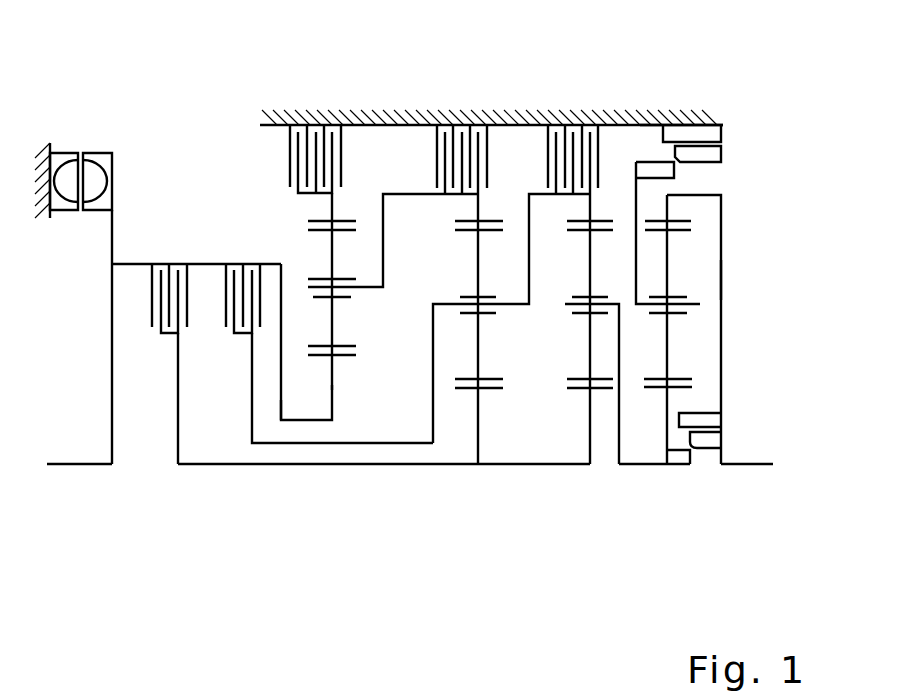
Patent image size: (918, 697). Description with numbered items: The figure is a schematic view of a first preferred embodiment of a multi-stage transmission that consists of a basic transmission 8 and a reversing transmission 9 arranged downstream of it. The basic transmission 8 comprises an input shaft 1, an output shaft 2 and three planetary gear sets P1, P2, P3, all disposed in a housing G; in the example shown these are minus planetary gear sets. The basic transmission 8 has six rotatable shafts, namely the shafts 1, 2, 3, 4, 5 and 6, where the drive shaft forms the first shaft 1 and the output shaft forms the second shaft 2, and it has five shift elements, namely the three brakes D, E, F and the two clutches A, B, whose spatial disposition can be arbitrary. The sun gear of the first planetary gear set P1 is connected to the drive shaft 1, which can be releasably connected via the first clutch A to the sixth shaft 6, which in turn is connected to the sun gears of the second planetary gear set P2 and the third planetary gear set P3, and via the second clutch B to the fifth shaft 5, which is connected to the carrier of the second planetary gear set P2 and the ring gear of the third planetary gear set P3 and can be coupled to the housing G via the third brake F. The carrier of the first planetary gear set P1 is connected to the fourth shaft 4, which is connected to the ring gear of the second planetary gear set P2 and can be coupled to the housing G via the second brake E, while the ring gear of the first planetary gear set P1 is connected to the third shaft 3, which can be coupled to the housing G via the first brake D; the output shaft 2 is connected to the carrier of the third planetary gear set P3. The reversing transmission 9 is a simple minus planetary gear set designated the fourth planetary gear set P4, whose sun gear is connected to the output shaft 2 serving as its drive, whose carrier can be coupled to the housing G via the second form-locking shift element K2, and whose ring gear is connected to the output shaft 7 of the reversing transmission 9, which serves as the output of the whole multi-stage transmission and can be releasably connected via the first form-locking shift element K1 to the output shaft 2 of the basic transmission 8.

The input shaft 1 is at (332, 390).
The output shaft 2 is at (622, 430).
The third shaft 3 is at (332, 212).
The fourth shaft 4 is at (383, 240).
The fifth shaft 5 is at (528, 247).
The sixth shaft 6 is at (177, 433).
The output shaft of the reversing transmission 7 is at (722, 367).
The basic transmission 8 is at (373, 403).
The reversing transmission 9 is at (738, 270).
The first planetary gear set P1 is at (331, 479).
The second planetary gear set P2 is at (478, 479).
The third planetary gear set P3 is at (589, 479).
The fourth planetary gear set P4 is at (667, 479).
The first clutch A is at (170, 280).
The second clutch B is at (243, 280).
The first brake D is at (315, 134).
The second brake E is at (462, 134).
The third brake F is at (573, 134).
The first form-locking shift element K1 is at (694, 463).
The second form-locking shift element K2 is at (678, 189).
The housing G is at (697, 125).